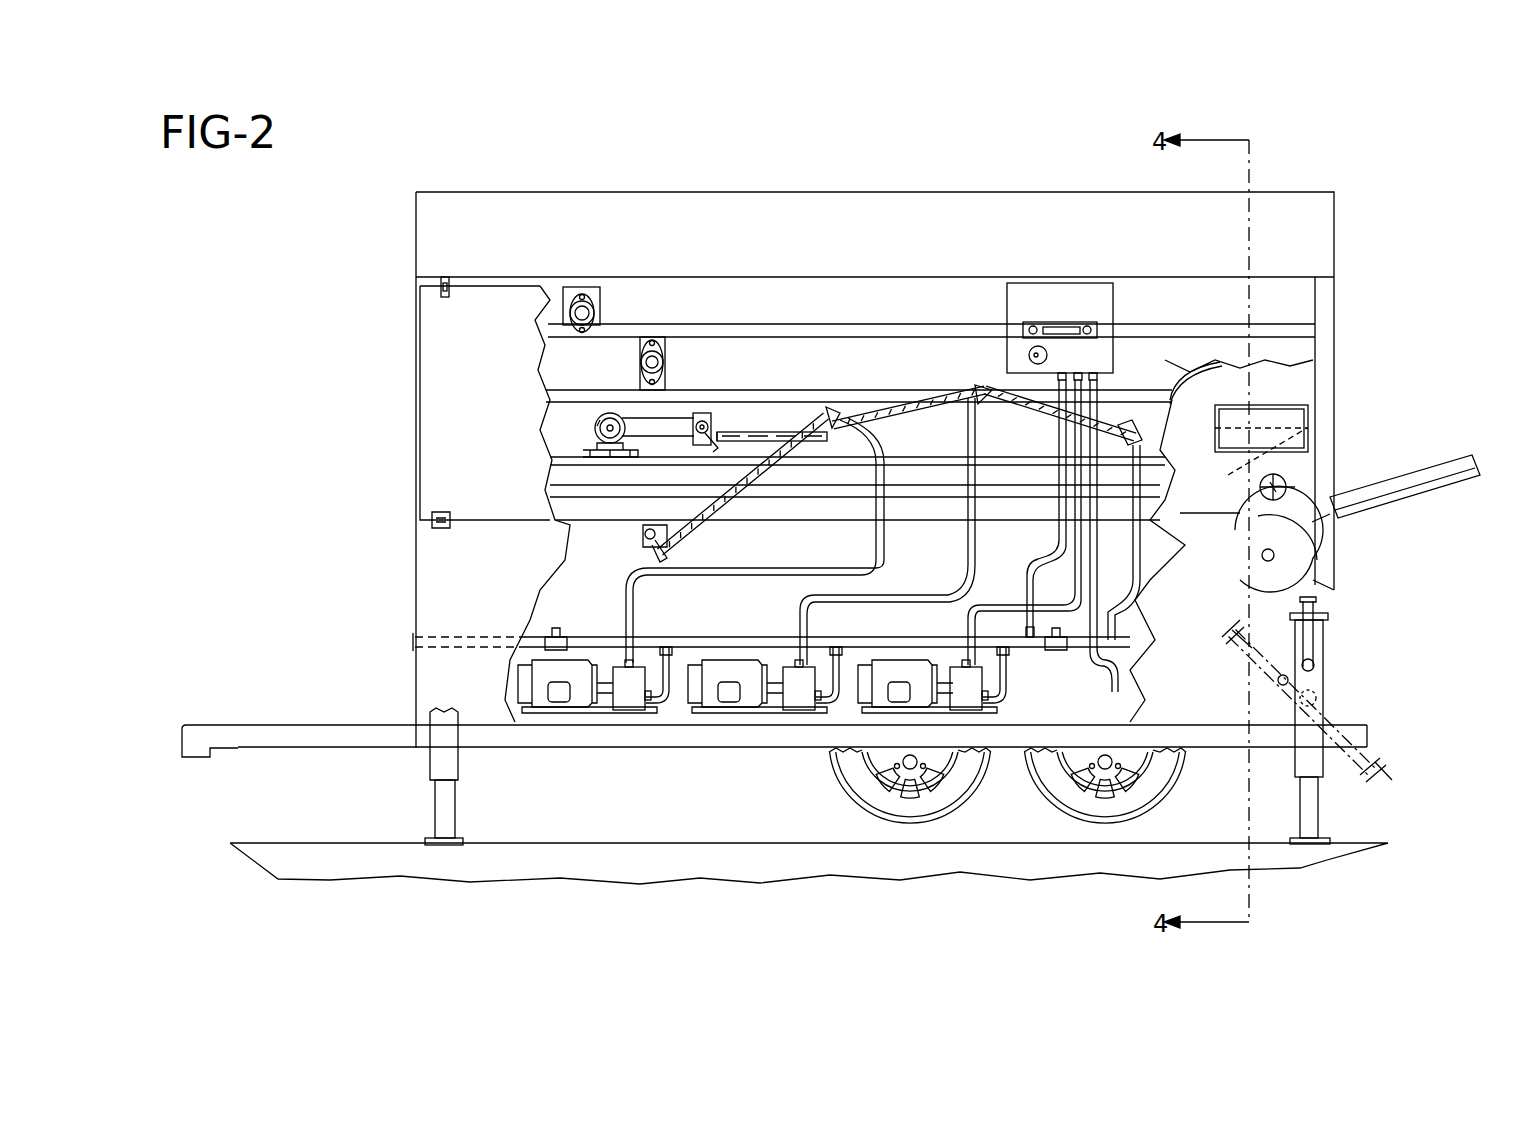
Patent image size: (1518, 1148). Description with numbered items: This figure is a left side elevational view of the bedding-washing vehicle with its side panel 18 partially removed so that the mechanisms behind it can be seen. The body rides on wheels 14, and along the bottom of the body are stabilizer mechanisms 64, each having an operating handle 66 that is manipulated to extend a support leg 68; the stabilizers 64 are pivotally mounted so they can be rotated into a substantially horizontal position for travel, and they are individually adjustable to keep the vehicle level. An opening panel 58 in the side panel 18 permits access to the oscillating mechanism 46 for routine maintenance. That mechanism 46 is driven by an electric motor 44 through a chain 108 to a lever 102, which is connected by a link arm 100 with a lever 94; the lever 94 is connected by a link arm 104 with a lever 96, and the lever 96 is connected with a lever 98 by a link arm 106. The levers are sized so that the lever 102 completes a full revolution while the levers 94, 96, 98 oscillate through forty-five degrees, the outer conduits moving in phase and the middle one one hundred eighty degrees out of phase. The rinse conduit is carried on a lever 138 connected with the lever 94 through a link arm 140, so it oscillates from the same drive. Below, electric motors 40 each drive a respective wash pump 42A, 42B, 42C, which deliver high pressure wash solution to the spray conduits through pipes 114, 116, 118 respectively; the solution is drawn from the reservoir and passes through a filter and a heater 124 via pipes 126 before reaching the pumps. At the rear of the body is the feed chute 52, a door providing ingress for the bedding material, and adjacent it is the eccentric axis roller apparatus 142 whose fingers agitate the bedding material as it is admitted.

The wheels 14 is at (868, 810).
The side panel 18 is at (691, 249).
The electric motors 40 is at (560, 700).
The pump 42A is at (628, 692).
The pump 42B is at (797, 692).
The pump 42C is at (965, 692).
The electric motor 44 is at (597, 424).
The oscillating mechanism 46 is at (758, 412).
The feed chute 52 is at (1463, 455).
The opening panel 58 is at (503, 494).
The stabilizer mechanism 64 is at (1352, 700).
The operating handle 66 is at (1310, 647).
The support leg 68 is at (445, 793).
The lever 94 is at (833, 418).
The lever 96 is at (975, 398).
The lever 98 is at (1128, 422).
The link arm 100 is at (786, 430).
The lever 102 is at (706, 413).
The link arm 104 is at (910, 410).
The link arm 106 is at (1045, 400).
The chain 108 is at (645, 420).
The pipe 114 is at (886, 574).
The pipe 116 is at (799, 630).
The pipe 118 is at (966, 630).
The heater 124 is at (1060, 283).
The pipes 126 is at (1027, 590).
The lever 138 is at (648, 548).
The link arm 140 is at (700, 532).
The eccentric axis roller apparatus 142 is at (1286, 478).